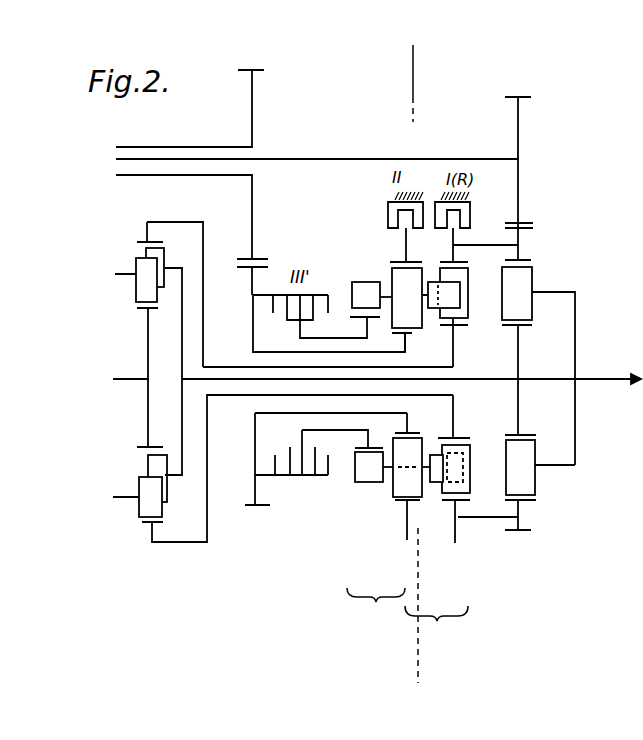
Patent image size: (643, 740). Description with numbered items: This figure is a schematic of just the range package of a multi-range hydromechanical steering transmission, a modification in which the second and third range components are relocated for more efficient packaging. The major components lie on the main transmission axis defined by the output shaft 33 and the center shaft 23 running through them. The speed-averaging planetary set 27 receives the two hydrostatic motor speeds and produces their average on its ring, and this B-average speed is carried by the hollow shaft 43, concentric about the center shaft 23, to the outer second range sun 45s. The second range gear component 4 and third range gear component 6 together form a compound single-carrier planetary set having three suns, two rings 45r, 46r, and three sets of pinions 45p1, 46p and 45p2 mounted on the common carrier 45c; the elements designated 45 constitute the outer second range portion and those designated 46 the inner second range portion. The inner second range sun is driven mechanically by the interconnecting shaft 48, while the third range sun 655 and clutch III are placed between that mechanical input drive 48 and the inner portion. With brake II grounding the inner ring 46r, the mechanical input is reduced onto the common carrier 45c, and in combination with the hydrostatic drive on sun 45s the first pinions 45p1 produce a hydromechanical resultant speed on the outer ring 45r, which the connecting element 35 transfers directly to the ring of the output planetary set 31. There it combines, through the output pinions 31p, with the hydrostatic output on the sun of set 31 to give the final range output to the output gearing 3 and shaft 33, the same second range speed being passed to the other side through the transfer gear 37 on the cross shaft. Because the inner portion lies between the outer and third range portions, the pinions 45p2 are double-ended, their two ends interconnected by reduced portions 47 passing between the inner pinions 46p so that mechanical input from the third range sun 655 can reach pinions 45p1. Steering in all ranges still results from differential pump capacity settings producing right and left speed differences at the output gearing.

The output gears 3 is at (561, 476).
The second range gear component 4 is at (405, 41).
The third range gear component 6 is at (376, 612).
The center shaft 23 is at (470, 380).
The planetary set 27 is at (152, 574).
The output planetary set 31 is at (556, 503).
The pinion gear 31p is at (532, 278).
The output shaft 33 is at (596, 380).
The connecting element 35 is at (483, 244).
The transfer gear 37 is at (518, 134).
The hollow shaft 43 is at (242, 396).
The outer second range portion 45 is at (437, 238).
The clutch carrier 45c is at (430, 319).
The outer second range sun gear 45s is at (458, 327).
The first set of planetary pinions 45p1 is at (437, 485).
The double-ended planetary pinions 45p2 is at (417, 552).
The outer second range ring gear 45r is at (463, 505).
The inner second range portion 46 is at (387, 243).
The inner second range planetary pinions 46p is at (394, 490).
The inner second range ring gear 46r is at (400, 507).
The reduced portions 47 is at (389, 289).
The second range mechanical input drive 48 is at (252, 329).
The sun gear 655 is at (357, 323).